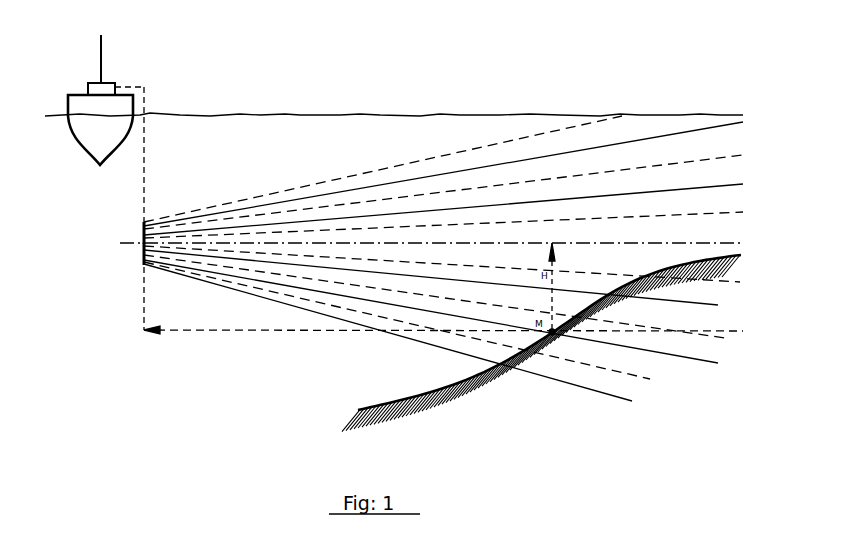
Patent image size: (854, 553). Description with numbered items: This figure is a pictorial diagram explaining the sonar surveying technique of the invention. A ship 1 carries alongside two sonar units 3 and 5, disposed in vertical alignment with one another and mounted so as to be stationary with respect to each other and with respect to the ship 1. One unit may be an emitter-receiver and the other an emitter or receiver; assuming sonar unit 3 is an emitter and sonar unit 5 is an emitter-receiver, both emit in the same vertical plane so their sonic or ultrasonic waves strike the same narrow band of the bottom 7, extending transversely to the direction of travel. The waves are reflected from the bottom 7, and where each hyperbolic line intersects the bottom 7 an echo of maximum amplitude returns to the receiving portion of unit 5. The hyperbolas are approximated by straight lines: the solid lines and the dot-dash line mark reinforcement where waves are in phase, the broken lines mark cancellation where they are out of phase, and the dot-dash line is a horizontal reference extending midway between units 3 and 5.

The ship 1 is at (79, 103).
The sonar unit 3 is at (143, 224).
The sonar unit 5 is at (143, 262).
The bottom 7 is at (412, 397).